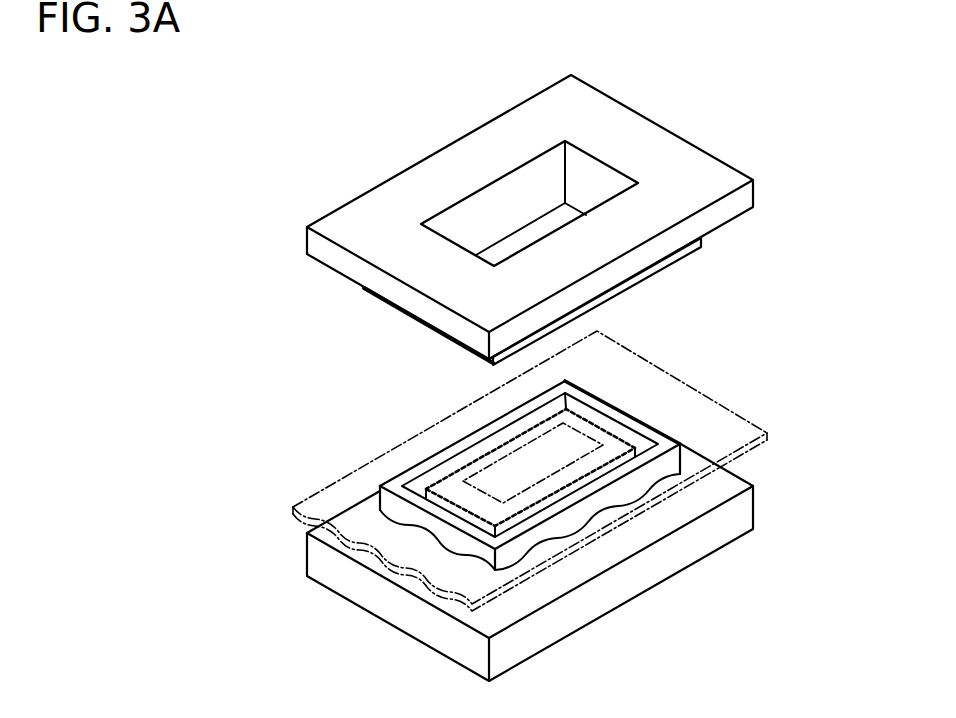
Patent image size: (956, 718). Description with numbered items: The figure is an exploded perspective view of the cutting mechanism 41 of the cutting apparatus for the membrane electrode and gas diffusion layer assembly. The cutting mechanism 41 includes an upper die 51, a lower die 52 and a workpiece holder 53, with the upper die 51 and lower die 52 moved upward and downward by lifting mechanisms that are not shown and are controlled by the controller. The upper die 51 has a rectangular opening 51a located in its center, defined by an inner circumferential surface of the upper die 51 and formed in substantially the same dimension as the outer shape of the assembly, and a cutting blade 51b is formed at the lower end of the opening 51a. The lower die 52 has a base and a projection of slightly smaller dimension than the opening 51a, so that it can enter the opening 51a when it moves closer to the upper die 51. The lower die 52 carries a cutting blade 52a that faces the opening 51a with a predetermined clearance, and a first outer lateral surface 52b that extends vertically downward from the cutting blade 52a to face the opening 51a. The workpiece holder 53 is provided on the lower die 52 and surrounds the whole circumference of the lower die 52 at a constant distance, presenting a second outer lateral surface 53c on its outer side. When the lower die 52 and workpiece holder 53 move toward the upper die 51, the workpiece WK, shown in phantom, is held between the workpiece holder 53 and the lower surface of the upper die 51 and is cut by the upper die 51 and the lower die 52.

The cutting mechanism 41 is at (763, 331).
The upper die 51 is at (755, 191).
The opening 51a is at (598, 185).
The cutting blade 51b is at (517, 230).
The lower die 52 is at (740, 513).
The cutting blade 52a is at (468, 463).
The first outer lateral surface 52b is at (558, 497).
The workpiece holder 53 is at (683, 460).
The second outer lateral surface 53c is at (542, 533).
The workpiece WK is at (767, 433).